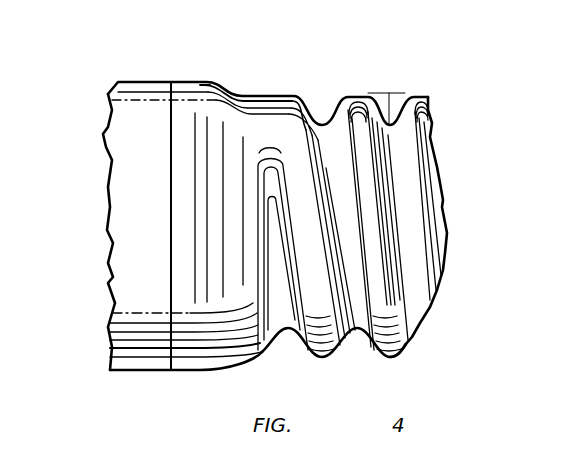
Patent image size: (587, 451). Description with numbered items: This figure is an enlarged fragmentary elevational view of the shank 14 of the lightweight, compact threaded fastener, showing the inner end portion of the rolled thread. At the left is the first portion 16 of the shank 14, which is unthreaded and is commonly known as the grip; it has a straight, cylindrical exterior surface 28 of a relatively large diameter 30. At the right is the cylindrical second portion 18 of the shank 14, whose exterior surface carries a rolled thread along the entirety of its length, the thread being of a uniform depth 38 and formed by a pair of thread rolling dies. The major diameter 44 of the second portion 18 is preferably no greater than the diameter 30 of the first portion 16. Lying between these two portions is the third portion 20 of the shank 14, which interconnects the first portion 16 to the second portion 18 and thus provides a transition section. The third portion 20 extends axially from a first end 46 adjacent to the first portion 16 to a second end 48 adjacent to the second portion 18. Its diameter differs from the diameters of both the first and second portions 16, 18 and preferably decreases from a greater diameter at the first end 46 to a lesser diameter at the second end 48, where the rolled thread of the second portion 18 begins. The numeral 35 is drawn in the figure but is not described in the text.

The shank 14 is at (159, 82).
The first portion 16 is at (140, 278).
The second portion 18 is at (453, 213).
The third portion 20 is at (237, 92).
The exterior surface 28 is at (133, 293).
The diameter 30 is at (171, 167).
The helical corrugation 35 is at (337, 140).
The depth 38 is at (391, 108).
The major diameter 44 is at (415, 332).
The first end 46 is at (207, 82).
The second end 48 is at (302, 98).